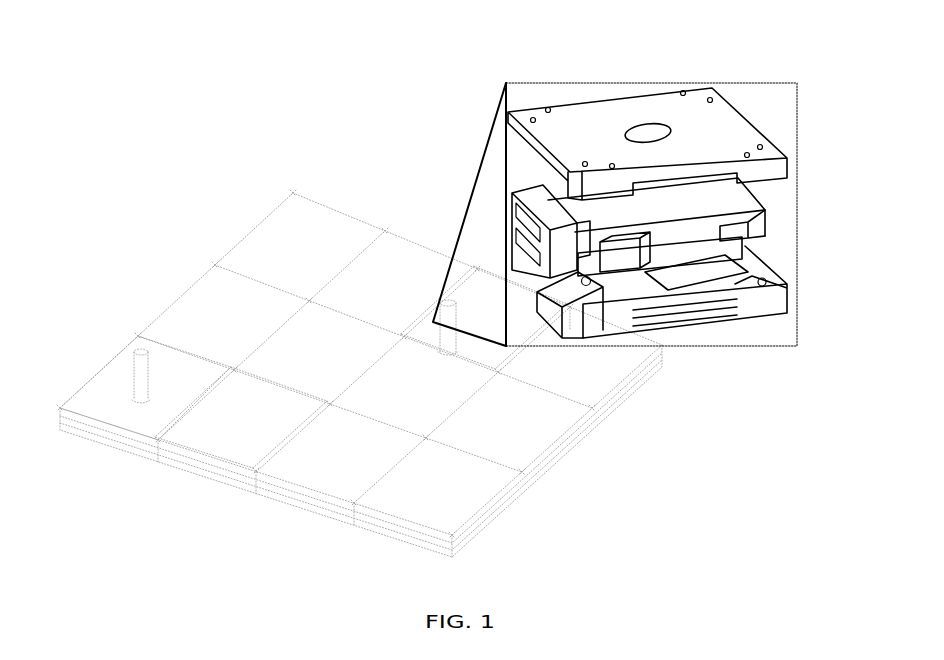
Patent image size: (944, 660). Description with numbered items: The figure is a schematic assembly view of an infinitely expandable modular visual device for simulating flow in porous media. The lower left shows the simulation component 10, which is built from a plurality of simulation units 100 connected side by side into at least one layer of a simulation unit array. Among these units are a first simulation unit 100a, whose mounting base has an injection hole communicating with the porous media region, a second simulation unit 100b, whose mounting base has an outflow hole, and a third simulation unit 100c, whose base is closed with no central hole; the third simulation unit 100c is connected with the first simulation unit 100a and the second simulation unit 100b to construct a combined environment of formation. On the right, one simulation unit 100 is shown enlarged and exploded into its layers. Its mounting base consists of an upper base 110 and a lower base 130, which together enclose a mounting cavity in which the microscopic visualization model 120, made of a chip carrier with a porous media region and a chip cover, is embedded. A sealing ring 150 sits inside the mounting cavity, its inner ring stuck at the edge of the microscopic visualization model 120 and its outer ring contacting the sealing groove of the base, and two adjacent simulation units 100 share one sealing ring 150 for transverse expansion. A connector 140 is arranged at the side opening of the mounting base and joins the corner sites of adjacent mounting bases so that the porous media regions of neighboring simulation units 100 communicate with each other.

The simulation component 10 is at (205, 335).
The simulation unit 100 is at (620, 128).
The first simulation unit 100a is at (112, 383).
The second simulation unit 100b is at (418, 337).
The third simulation unit 100c is at (330, 455).
The upper base 110 is at (717, 128).
The microscopic visualization model 120 is at (737, 210).
The lower base 130 is at (770, 300).
The connector 140 is at (580, 297).
The sealing ring 150 is at (545, 203).